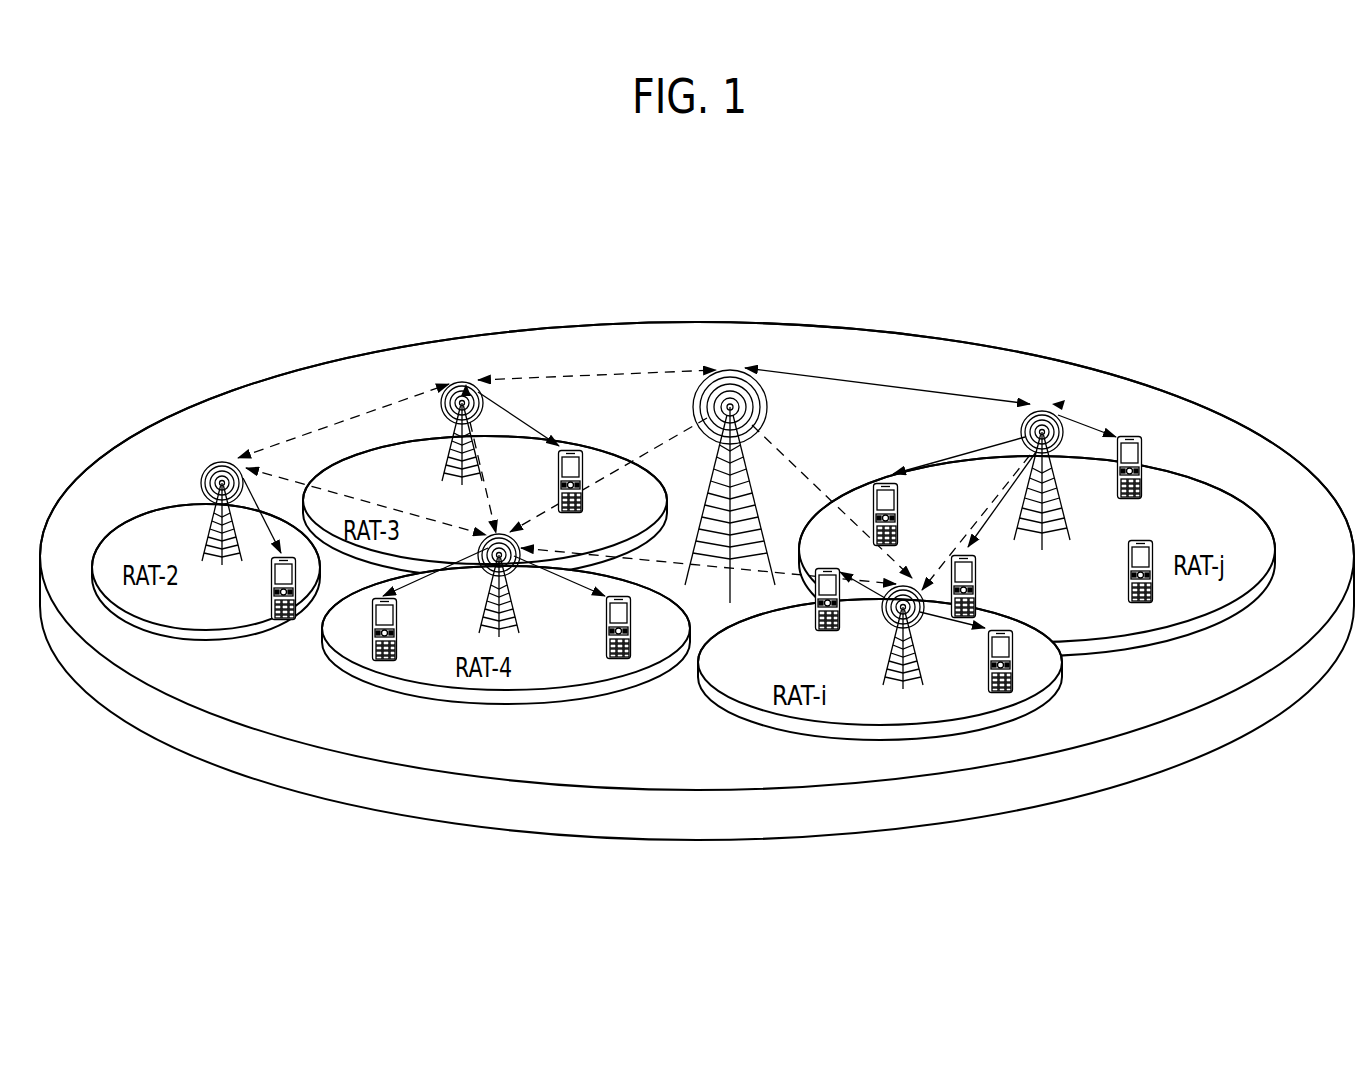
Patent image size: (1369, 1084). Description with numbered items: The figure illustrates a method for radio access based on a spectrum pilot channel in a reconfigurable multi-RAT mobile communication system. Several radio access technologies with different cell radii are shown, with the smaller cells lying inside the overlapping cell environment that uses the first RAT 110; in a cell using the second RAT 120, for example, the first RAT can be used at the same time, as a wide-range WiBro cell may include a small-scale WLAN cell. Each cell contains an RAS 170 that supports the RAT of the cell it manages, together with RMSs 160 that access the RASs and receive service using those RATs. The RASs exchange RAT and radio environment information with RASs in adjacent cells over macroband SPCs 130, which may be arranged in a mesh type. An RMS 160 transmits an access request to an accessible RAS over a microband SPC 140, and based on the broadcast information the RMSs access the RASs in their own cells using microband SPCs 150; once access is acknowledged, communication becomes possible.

The RAT-1 110 is at (1224, 416).
The RAT-2 120 is at (166, 512).
The macroband SPC 130 is at (836, 378).
The microband SPC 140 is at (970, 443).
The microband SPC 150 is at (1080, 415).
The RMS 160 is at (1145, 541).
The RAS 170 is at (886, 676).